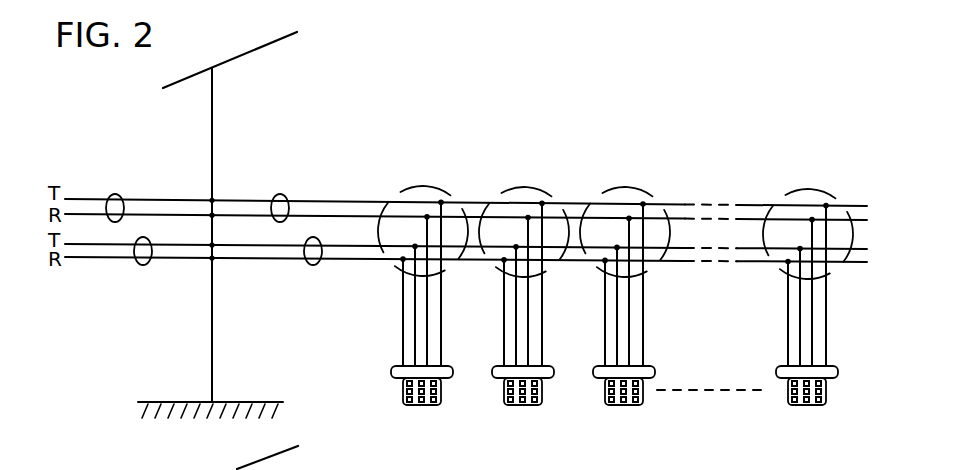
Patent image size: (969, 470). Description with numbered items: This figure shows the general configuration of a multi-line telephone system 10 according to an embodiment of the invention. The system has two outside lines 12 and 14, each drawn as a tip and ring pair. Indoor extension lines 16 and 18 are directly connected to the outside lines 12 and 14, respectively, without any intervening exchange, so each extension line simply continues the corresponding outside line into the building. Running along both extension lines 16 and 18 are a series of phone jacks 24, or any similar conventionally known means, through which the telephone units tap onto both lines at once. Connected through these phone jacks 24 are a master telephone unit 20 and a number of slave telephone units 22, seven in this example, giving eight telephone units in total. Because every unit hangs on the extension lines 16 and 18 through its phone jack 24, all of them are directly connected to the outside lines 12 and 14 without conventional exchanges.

The multi-line telephone system 10 is at (416, 142).
The outside line 12 is at (116, 194).
The outside line 14 is at (143, 265).
The extension line 16 is at (280, 194).
The extension line 18 is at (313, 265).
The master telephone unit 20 is at (423, 405).
The slave telephone unit 22 is at (524, 405).
The phone jack 24 is at (425, 188).